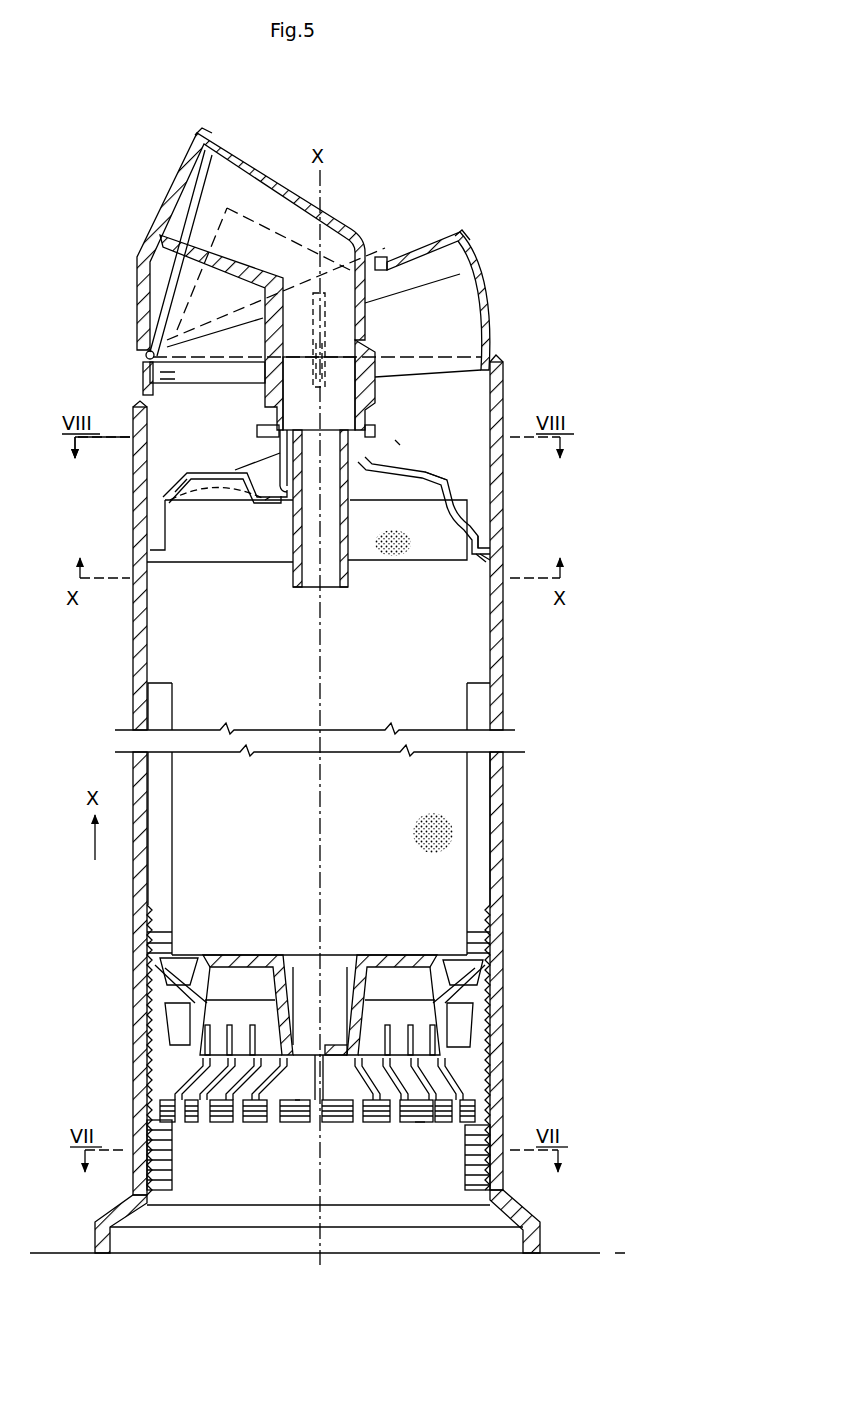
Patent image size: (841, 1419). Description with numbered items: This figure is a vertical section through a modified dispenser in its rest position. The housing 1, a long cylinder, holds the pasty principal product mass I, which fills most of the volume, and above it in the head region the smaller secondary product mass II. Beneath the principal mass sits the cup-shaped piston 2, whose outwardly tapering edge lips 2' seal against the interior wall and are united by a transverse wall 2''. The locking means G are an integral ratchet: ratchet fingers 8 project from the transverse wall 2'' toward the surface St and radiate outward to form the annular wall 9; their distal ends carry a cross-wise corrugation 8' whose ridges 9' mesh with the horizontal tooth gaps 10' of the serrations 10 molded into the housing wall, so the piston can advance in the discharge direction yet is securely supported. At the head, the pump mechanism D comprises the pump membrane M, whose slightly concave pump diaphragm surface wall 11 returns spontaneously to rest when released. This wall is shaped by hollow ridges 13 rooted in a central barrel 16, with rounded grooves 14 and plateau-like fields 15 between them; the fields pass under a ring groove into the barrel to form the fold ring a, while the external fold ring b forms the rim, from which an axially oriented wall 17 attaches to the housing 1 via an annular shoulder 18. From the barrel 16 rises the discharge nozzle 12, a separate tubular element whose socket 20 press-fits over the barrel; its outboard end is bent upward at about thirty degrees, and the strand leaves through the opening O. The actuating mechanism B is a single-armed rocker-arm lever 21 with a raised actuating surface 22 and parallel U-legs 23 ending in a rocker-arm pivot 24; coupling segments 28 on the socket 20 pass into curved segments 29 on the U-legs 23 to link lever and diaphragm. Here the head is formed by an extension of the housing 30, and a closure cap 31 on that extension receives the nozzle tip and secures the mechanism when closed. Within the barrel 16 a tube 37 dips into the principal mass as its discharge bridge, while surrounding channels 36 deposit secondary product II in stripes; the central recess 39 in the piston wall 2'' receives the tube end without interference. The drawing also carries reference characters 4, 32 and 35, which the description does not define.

The housing 1 is at (504, 652).
The piston 2 is at (482, 982).
The edge lips 2' is at (491, 996).
The transverse wall 2'' is at (320, 985).
The base flange 4 is at (542, 1236).
The ratchet fingers 8 is at (314, 1108).
The cross-wise corrugation 8' is at (294, 1137).
The annular wall 9 is at (148, 1001).
The ridges 9' is at (281, 1131).
The serrations 10 is at (281, 924).
The tooth gaps 10' is at (282, 1050).
The pump diaphragm surface wall 11 is at (440, 478).
The discharge nozzle 12 is at (367, 303).
The hollow ridges 13 is at (410, 468).
The grooves 14 is at (210, 501).
The fields 15 is at (205, 474).
The barrel 16 is at (281, 440).
The axially oriented wall 17 is at (480, 536).
The annular shoulder 18 is at (490, 553).
The socket 20 is at (380, 373).
The rocker-arm lever 21 is at (372, 257).
The actuating surface 22 is at (418, 242).
The U-legs 23 is at (217, 325).
The rocker-arm pivot 24 is at (143, 375).
The coupling segments 28 is at (376, 347).
The curved segments 29 is at (363, 336).
The extension of the housing 30 is at (503, 396).
The closure cap 31 is at (218, 147).
The pivot 32 is at (147, 356).
The piston plate 35 is at (300, 507).
The channels 36 is at (283, 427).
The tube 37 is at (295, 560).
The central recess 39 is at (312, 965).
The fold ring a is at (266, 500).
The external fold ring b is at (175, 492).
The actuating mechanism B is at (462, 232).
The pump mechanism D is at (482, 226).
The locking means G is at (420, 1133).
The principal product mass I is at (450, 828).
The secondary product mass II is at (400, 545).
The pump membrane M is at (406, 441).
The opening O is at (198, 185).
The surface St is at (595, 1253).